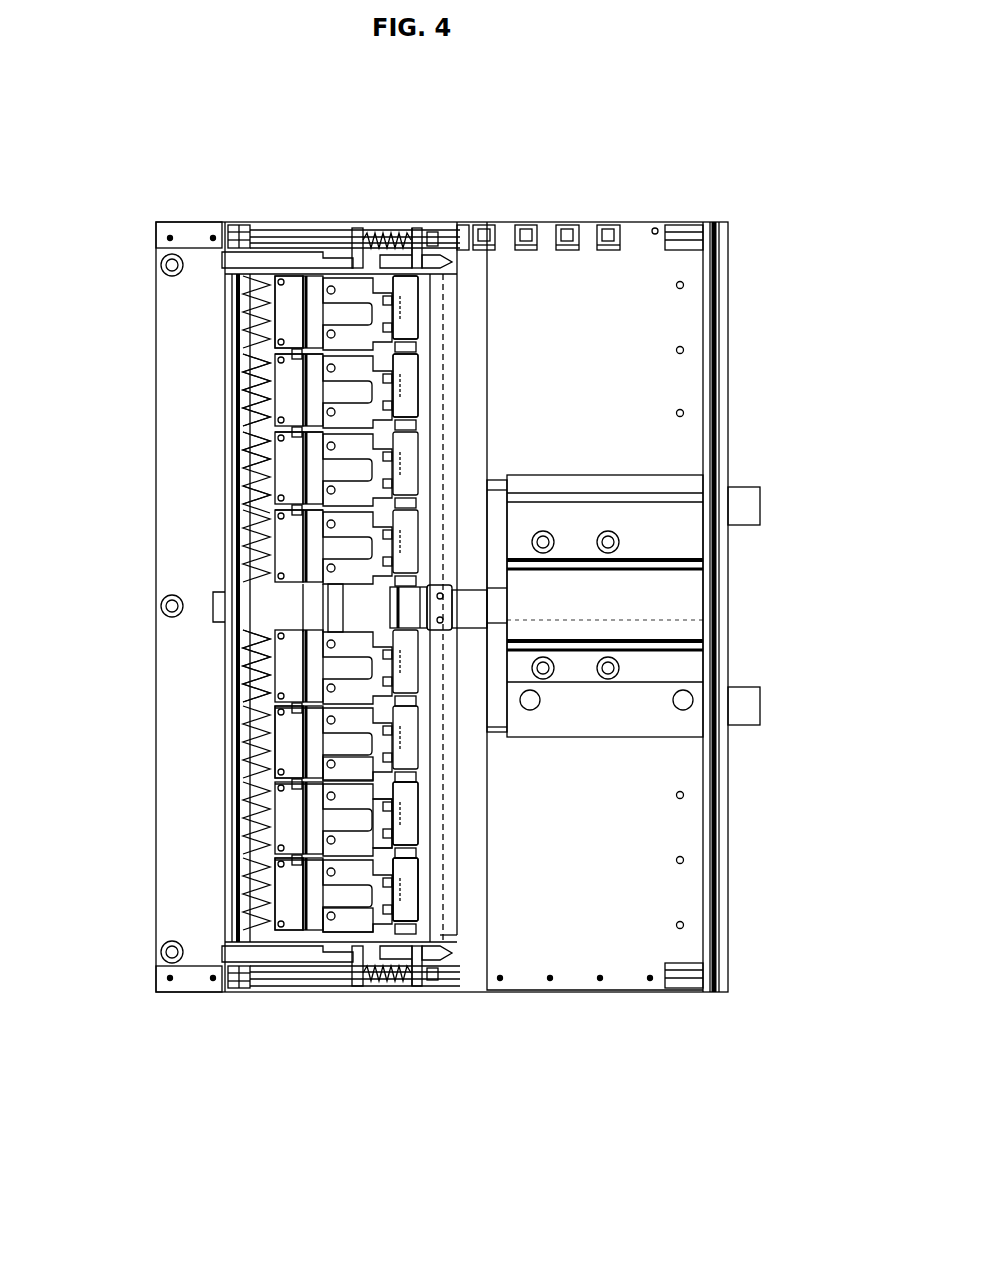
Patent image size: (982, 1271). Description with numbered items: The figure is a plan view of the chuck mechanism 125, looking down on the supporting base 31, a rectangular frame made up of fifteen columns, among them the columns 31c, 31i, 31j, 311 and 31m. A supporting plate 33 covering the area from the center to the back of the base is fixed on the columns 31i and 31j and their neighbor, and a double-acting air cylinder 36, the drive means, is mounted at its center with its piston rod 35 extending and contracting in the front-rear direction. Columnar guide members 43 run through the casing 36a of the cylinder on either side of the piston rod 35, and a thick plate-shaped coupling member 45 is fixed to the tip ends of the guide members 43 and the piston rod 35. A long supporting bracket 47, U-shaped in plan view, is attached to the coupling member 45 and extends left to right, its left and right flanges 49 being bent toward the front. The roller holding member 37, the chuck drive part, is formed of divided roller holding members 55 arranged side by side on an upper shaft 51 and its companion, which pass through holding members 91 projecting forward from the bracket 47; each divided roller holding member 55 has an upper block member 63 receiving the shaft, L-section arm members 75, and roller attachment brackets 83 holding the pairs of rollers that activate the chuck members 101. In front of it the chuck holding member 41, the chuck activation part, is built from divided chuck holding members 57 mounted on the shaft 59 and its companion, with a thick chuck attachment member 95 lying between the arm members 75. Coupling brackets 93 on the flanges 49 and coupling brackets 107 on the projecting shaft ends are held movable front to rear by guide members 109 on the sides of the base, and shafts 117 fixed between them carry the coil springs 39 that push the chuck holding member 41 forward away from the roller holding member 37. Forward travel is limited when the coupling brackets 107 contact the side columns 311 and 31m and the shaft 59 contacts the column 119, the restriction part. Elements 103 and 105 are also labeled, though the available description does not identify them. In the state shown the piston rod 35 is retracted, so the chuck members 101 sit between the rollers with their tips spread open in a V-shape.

The supporting base 31 is at (771, 579).
The column 31c is at (722, 325).
The column 31i is at (680, 225).
The column 31j is at (680, 992).
The column 31m is at (232, 990).
The column 311 is at (244, 225).
The supporting plate 33 is at (640, 900).
The piston rod 35 is at (492, 617).
The double-acting air cylinder 36 is at (649, 606).
The casing 36a is at (665, 623).
The roller holding member 37 is at (445, 377).
The coil spring 39 is at (384, 232).
The chuck holding member 41 is at (292, 722).
The guide member 43 is at (501, 497).
The coupling member 45 is at (489, 490).
The supporting bracket 47 is at (453, 352).
The flange 49 is at (486, 225).
The shaft 51 is at (492, 610).
The divided roller holding member 55 is at (415, 308).
The divided chuck holding member 57 is at (333, 772).
The shaft 59 is at (336, 608).
The upper block member 63 is at (422, 402).
The arm member 75 is at (420, 882).
The roller attachment bracket 83 is at (288, 316).
The holding member 91 is at (455, 562).
The coupling bracket 93 is at (413, 228).
The chuck attachment member 95 is at (384, 795).
The chuck member 101 is at (241, 360).
The spring 103 is at (256, 496).
The spring 105 is at (258, 434).
The coupling bracket 107 is at (356, 228).
The guide member 109 is at (262, 262).
The shaft 117 is at (440, 252).
The column 119 is at (215, 607).
The chuck mechanism 125 is at (542, 213).